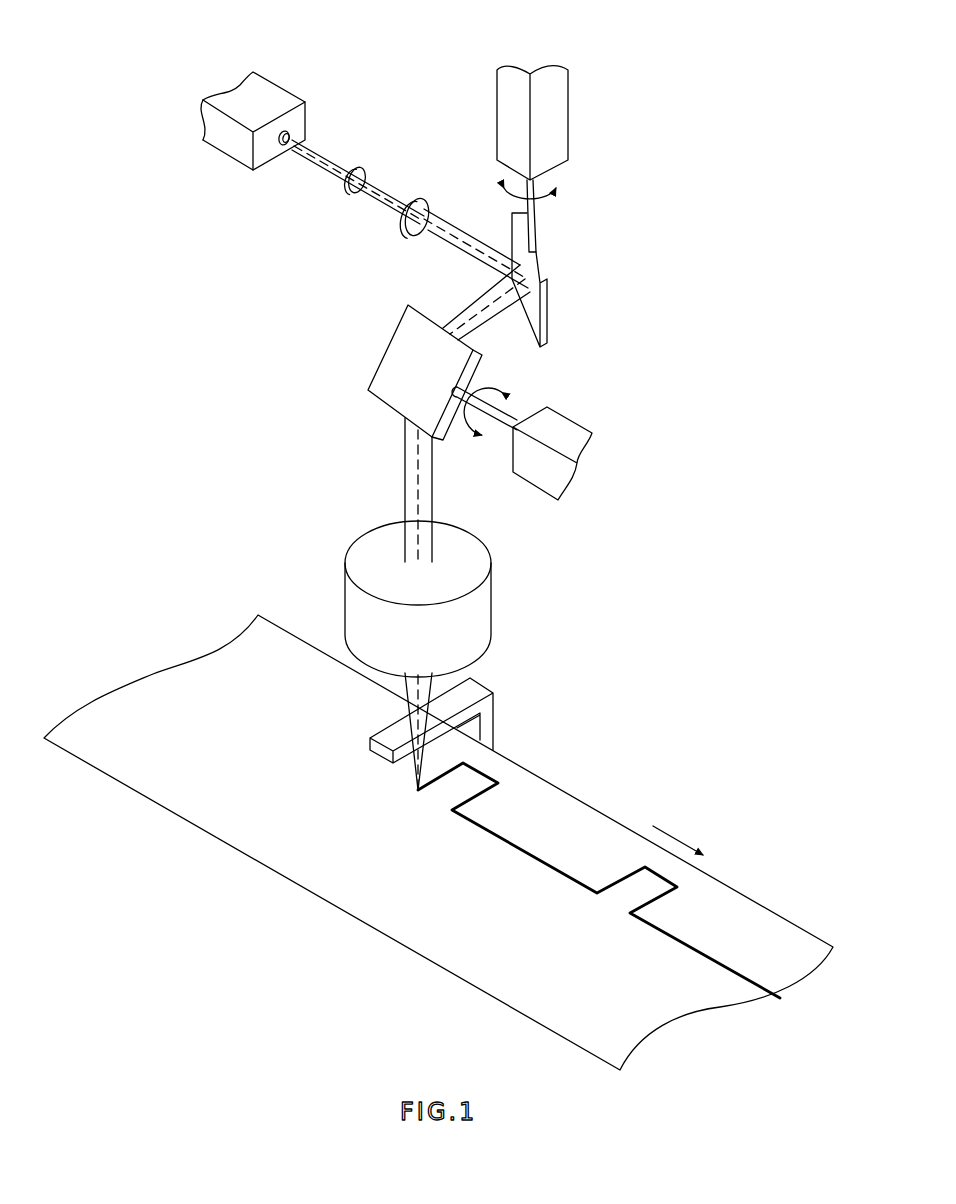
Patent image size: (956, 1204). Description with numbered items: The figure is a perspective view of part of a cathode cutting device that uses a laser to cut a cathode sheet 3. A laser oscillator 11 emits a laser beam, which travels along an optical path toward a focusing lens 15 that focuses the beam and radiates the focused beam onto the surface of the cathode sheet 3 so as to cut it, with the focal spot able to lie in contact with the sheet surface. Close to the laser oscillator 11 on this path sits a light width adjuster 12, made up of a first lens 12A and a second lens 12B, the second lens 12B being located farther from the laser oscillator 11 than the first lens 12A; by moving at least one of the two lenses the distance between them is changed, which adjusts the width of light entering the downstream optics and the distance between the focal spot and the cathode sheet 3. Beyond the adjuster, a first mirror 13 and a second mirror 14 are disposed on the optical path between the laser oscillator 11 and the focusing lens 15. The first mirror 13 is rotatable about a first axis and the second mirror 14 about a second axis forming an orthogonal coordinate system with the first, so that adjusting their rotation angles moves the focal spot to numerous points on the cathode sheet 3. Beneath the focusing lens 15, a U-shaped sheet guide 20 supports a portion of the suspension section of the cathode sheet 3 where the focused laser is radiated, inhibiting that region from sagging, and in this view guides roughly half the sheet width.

The cathode sheet 3 is at (363, 896).
The laser oscillator 11 is at (270, 93).
The light width adjuster 12 is at (410, 159).
The first lens 12A is at (358, 167).
The second lens 12B is at (417, 198).
The first mirror 13 is at (541, 271).
The second mirror 14 is at (388, 368).
The focusing lens 15 is at (360, 572).
The sheet guide 20 is at (487, 712).